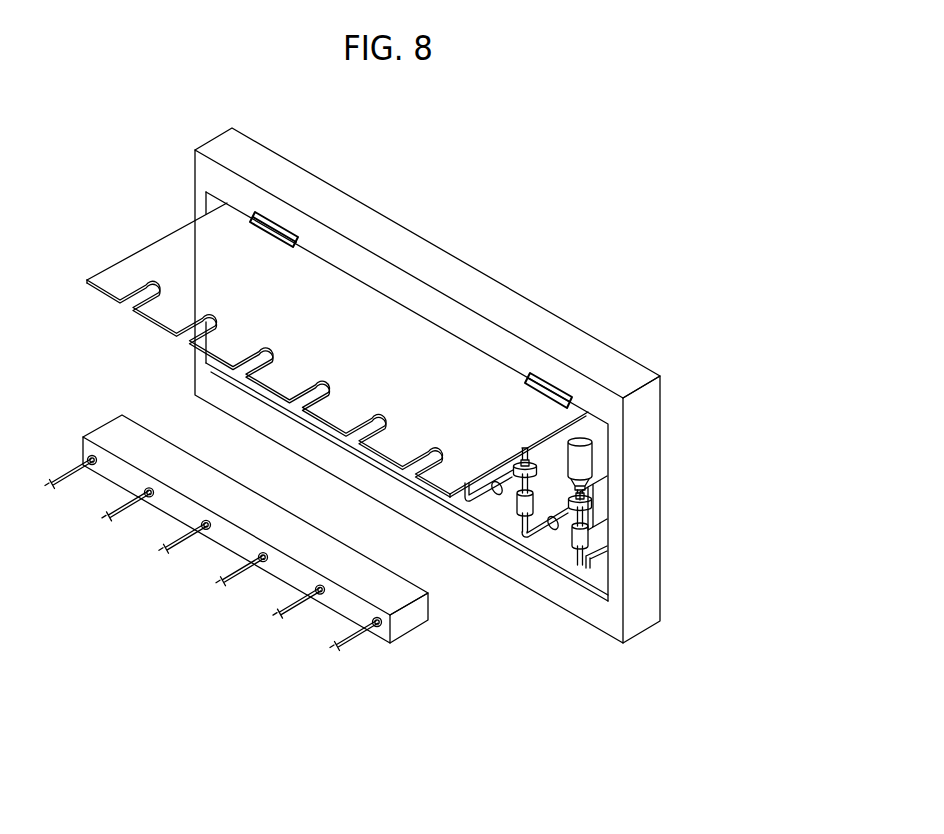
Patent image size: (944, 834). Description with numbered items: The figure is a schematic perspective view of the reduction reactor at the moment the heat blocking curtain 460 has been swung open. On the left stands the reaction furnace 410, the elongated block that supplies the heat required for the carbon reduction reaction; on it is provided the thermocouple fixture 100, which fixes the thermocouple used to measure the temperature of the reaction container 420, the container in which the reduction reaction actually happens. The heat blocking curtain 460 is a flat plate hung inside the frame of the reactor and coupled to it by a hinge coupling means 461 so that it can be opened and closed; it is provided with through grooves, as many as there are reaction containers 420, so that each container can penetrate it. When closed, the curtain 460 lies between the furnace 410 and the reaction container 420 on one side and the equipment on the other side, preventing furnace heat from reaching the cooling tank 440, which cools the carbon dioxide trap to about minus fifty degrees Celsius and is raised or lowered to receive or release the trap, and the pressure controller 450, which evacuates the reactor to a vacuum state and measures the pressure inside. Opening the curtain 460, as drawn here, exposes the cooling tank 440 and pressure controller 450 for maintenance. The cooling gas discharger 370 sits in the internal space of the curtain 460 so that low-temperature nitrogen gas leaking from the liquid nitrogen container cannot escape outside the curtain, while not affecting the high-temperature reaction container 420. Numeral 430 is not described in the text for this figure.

The thermocouple fixture 100 is at (279, 609).
The reaction furnace 410 is at (328, 608).
The reaction container 420 is at (468, 498).
The second valve 430 is at (524, 532).
The cooling tank 440 is at (597, 610).
The pressure controller 450 is at (580, 438).
The heat blocking curtain 460 is at (432, 348).
The hinge coupling means 461 is at (537, 377).
The cooling gas discharger 370 is at (602, 497).